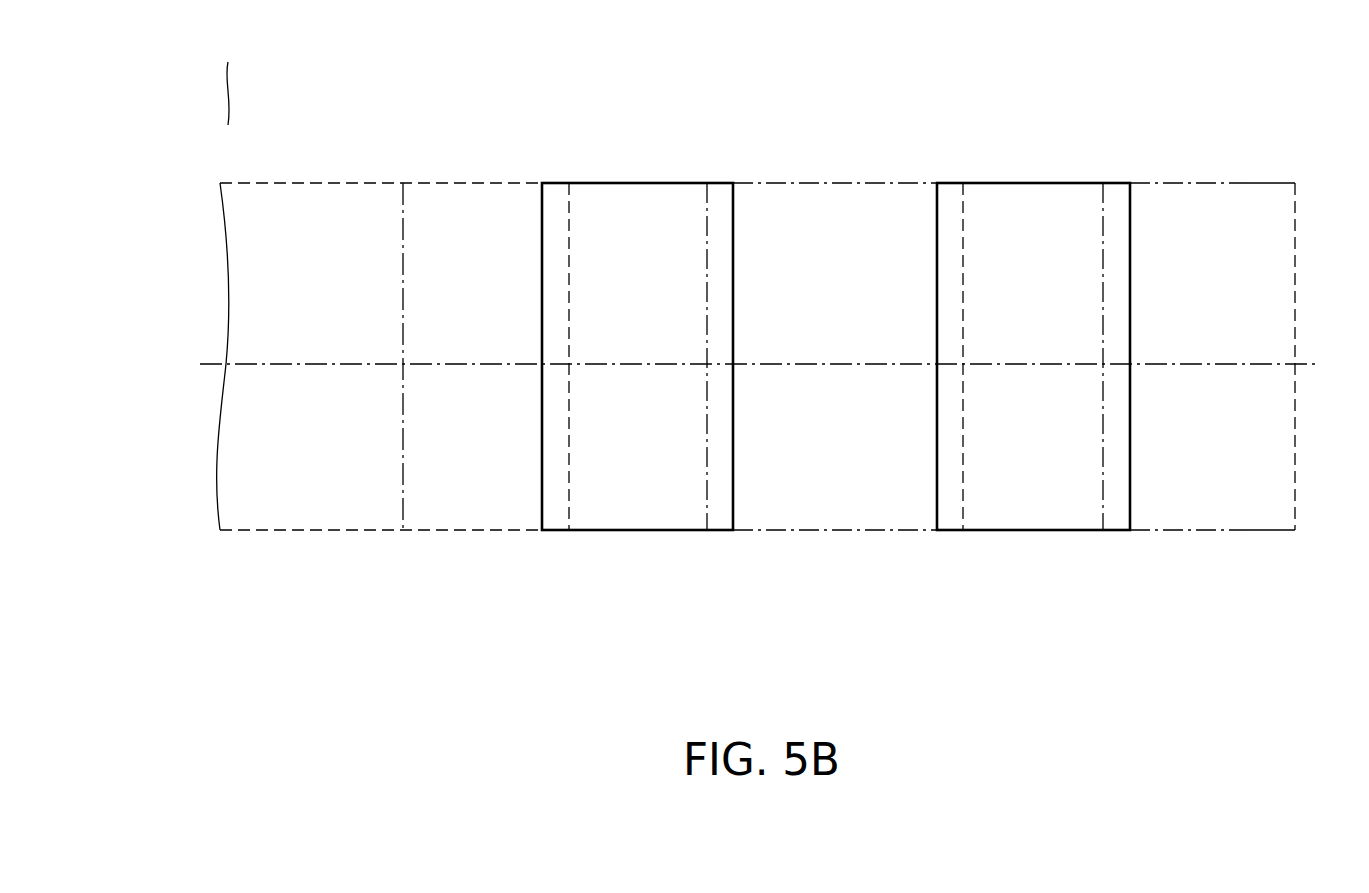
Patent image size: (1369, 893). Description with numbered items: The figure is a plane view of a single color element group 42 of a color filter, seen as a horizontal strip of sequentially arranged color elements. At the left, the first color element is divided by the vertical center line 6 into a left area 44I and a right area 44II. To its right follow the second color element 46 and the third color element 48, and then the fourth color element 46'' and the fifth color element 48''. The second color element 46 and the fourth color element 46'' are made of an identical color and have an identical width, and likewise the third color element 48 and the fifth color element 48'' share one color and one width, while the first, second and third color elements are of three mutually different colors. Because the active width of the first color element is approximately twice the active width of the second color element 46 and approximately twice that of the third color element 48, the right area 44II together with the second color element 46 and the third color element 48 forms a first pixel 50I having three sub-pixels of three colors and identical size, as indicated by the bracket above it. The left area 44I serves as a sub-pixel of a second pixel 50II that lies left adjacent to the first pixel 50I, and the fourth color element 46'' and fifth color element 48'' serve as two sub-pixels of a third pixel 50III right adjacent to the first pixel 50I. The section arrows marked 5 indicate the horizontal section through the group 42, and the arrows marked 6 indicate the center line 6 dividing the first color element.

The color element group 42 is at (1306, 536).
The left area 44I is at (283, 522).
The right area 44II is at (473, 522).
The second color element 46 is at (637, 401).
The third color element 48 is at (835, 401).
The fourth color element 46'' is at (1033, 401).
The fifth color element 48'' is at (1212, 401).
The first pixel 50I is at (405, 107).
The second pixel 50II is at (403, 100).
The third pixel 50III is at (1295, 105).
The section line 5 is at (200, 364).
The center line 6 is at (403, 130).